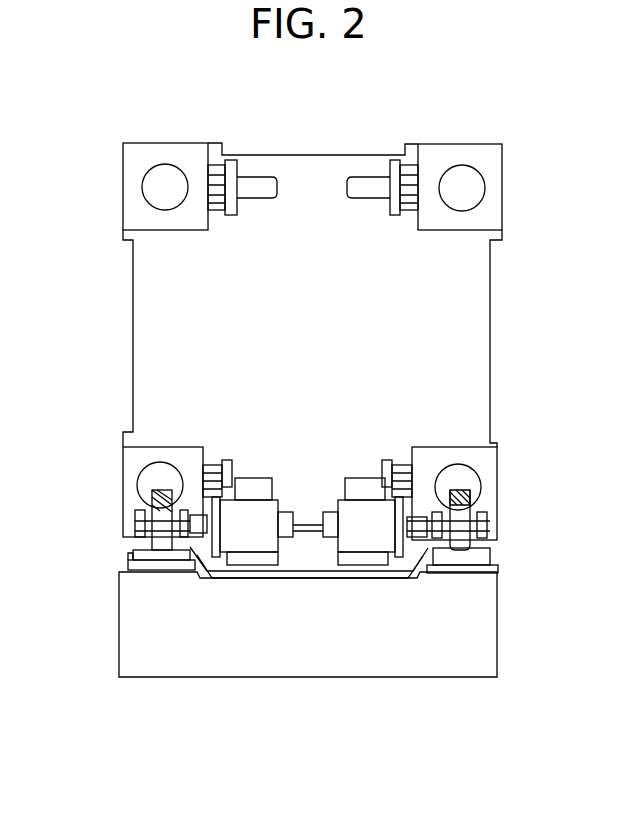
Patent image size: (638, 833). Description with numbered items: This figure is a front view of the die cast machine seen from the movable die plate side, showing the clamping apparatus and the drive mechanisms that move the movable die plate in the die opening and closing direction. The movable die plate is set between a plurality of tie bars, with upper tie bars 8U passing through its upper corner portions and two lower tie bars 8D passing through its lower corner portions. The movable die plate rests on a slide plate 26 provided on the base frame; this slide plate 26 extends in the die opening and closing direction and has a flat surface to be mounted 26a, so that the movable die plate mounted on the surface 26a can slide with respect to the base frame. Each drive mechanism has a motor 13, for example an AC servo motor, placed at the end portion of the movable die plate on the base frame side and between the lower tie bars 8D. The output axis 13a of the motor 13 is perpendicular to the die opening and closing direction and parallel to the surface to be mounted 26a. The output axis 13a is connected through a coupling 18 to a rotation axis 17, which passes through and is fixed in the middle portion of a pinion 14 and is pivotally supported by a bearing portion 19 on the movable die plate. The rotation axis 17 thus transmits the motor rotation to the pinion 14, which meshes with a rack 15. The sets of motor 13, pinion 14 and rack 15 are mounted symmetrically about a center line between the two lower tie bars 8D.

The upper tie bar 8U is at (468, 188).
The lower tie bar 8D is at (465, 478).
The motor 13 is at (365, 518).
The output axis 13a is at (400, 466).
The pinion 14 is at (462, 512).
The rack 15 is at (470, 492).
The rotation axis 17 is at (486, 526).
The bearing portion 19 is at (490, 538).
The coupling 18 is at (422, 573).
The slide plate 26 is at (124, 571).
The surface to be mounted 26a is at (130, 554).